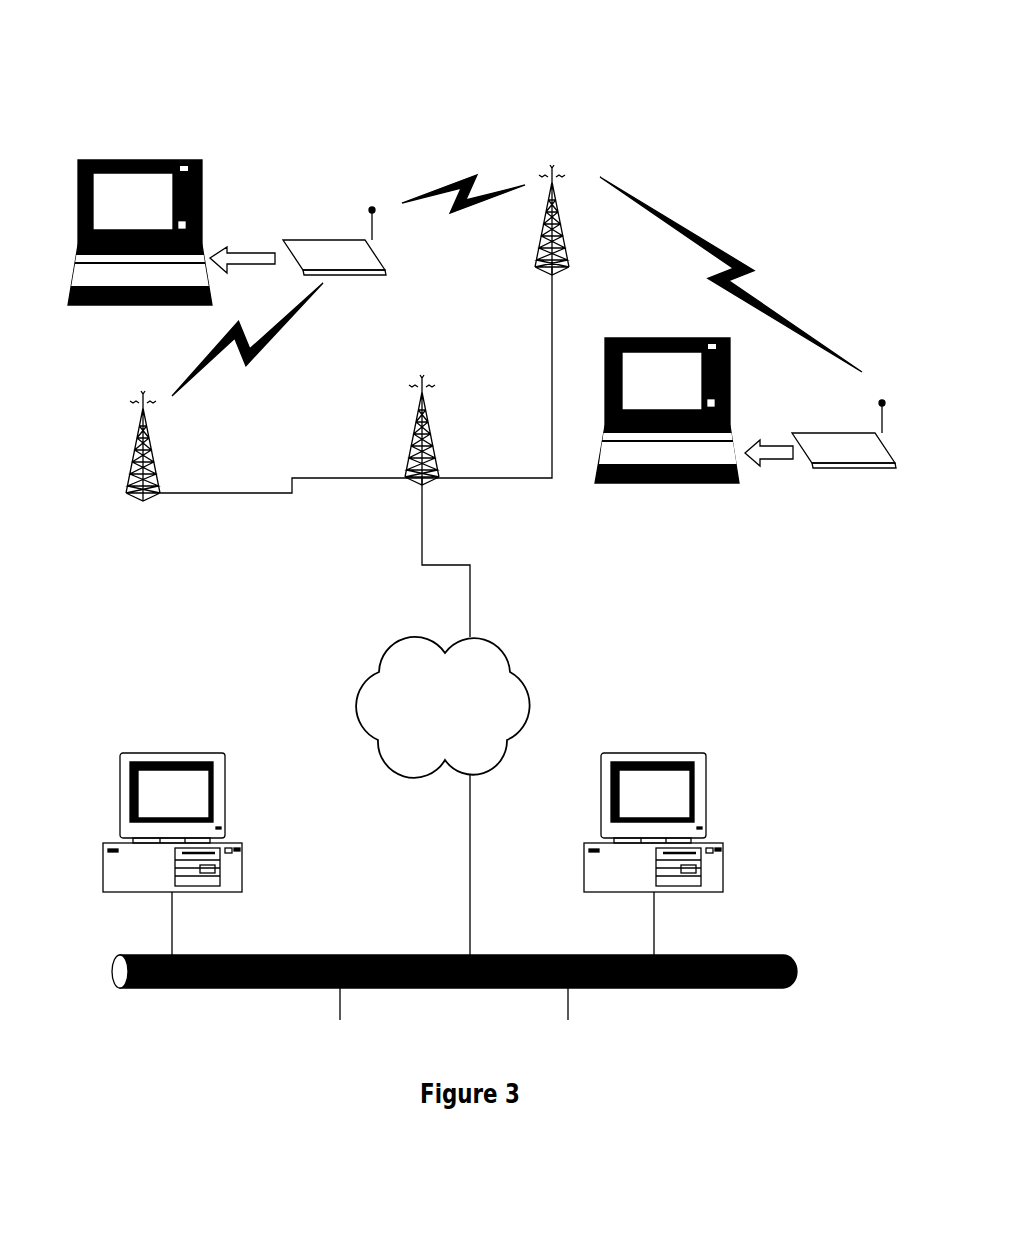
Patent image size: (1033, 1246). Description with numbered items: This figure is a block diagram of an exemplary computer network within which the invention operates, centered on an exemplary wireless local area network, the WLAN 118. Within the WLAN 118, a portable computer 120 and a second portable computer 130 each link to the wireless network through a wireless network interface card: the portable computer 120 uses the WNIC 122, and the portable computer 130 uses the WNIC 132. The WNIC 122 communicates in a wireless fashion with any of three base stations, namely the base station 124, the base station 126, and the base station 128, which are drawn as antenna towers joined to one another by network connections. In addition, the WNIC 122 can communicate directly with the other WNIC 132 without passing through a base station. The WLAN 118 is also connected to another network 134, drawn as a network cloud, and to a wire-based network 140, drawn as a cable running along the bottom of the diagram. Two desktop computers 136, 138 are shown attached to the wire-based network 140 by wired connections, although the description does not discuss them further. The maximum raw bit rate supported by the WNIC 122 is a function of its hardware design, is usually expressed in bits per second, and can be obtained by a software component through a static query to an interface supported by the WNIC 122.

The WLAN 118 is at (608, 132).
The portable computer 120 is at (175, 160).
The Wireless Network Interface Card (WNIC) 122 is at (388, 295).
The base station 124 is at (120, 528).
The base station 126 is at (383, 518).
The base station 128 is at (512, 303).
The portable computer 130 is at (693, 510).
The WNIC 132 is at (870, 468).
The network 134 is at (495, 667).
The desktop computer 136 is at (233, 777).
The desktop computer 138 is at (713, 782).
The wire-based network 140 is at (275, 953).